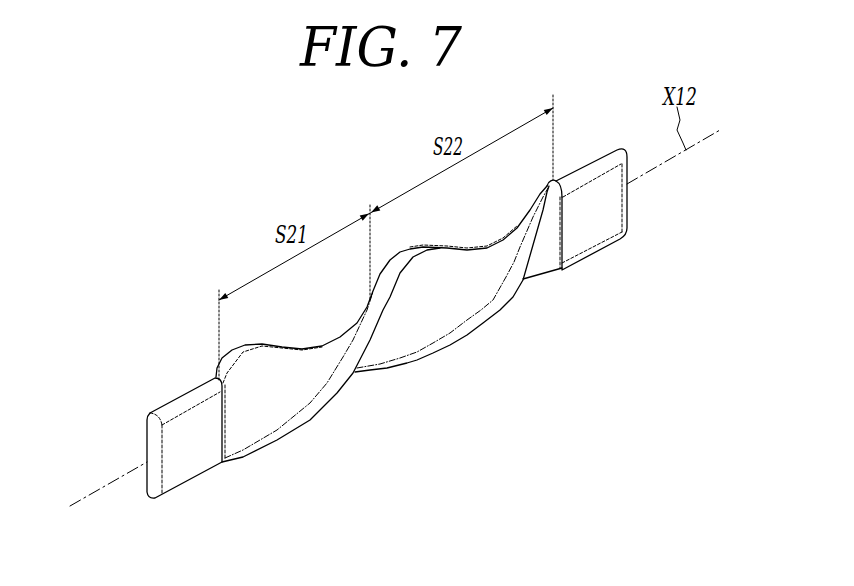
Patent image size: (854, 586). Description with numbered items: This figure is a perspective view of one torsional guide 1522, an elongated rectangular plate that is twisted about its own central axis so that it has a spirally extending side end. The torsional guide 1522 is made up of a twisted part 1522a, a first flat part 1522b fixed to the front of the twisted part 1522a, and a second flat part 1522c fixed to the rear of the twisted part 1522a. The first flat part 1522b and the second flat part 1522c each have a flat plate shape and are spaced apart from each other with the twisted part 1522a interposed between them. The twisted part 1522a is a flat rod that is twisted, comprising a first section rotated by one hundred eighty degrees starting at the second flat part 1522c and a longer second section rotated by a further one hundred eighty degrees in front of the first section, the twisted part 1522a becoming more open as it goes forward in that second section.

The torsional guide 1522 is at (590, 147).
The twisted part 1522a is at (312, 380).
The first flat part 1522b is at (585, 227).
The second flat part 1522c is at (188, 455).